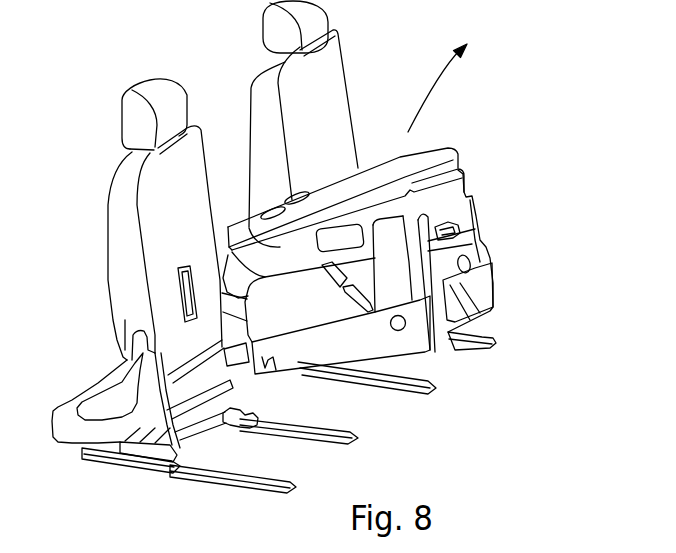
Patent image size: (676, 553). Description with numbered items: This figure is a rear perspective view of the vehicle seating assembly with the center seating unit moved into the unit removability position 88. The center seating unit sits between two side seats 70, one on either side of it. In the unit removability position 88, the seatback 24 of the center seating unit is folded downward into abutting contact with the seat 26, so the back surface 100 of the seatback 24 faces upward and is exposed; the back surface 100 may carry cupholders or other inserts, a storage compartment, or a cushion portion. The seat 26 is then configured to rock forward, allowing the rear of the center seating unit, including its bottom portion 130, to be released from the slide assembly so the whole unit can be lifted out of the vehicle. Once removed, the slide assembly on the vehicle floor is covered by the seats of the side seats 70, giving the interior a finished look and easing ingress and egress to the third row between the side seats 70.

The side seats 70 is at (118, 233).
The seatback 24 is at (250, 223).
The seat 26 is at (309, 303).
The back surface 100 is at (402, 163).
The bottom portion 130 is at (410, 350).
The unit removability position 88 is at (542, 60).